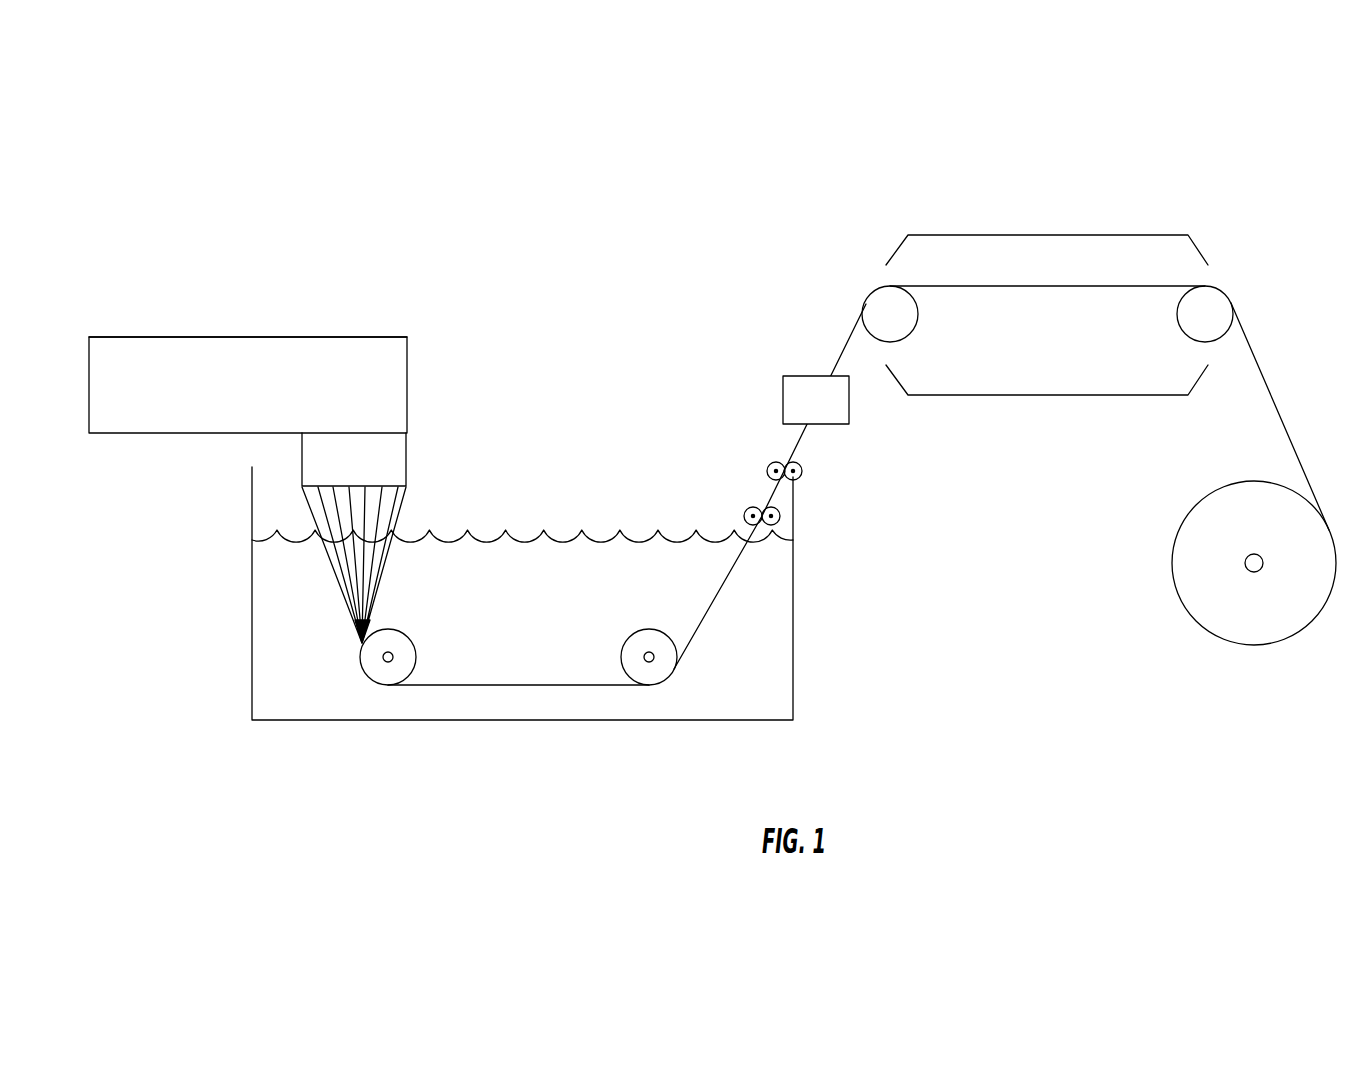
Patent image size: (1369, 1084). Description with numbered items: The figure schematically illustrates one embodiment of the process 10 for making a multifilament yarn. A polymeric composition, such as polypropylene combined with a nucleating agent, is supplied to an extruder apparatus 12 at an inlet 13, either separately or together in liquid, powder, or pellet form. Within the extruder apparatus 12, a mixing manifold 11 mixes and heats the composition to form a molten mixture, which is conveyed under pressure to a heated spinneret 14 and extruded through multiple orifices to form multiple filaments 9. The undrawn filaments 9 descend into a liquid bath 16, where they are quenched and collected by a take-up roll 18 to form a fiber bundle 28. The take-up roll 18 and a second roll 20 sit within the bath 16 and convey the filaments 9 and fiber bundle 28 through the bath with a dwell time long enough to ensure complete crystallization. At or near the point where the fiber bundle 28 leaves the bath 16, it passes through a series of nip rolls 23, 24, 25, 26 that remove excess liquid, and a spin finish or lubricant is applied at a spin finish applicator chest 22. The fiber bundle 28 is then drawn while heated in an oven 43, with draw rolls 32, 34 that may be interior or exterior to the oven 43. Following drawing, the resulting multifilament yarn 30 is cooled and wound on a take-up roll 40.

The process 10 is at (176, 212).
The mixing manifold 11 is at (257, 397).
The extruder apparatus 12 is at (421, 387).
The inlet 13 is at (115, 336).
The spinneret 14 is at (395, 453).
The filaments 9 is at (387, 567).
The liquid bath 16 is at (268, 570).
The take-up roll 18 is at (390, 675).
The roll 20 is at (665, 665).
The fiber bundle 28 is at (477, 683).
The spin finish applicator chest 22 is at (827, 412).
The nip roll 23 is at (746, 511).
The nip roll 24 is at (779, 518).
The nip roll 25 is at (770, 466).
The nip roll 26 is at (802, 468).
The draw roll 32 is at (905, 317).
The draw roll 34 is at (1188, 327).
The oven 43 is at (1031, 247).
The multifilament yarn 30 is at (1260, 362).
The take-up roll 40 is at (1202, 592).